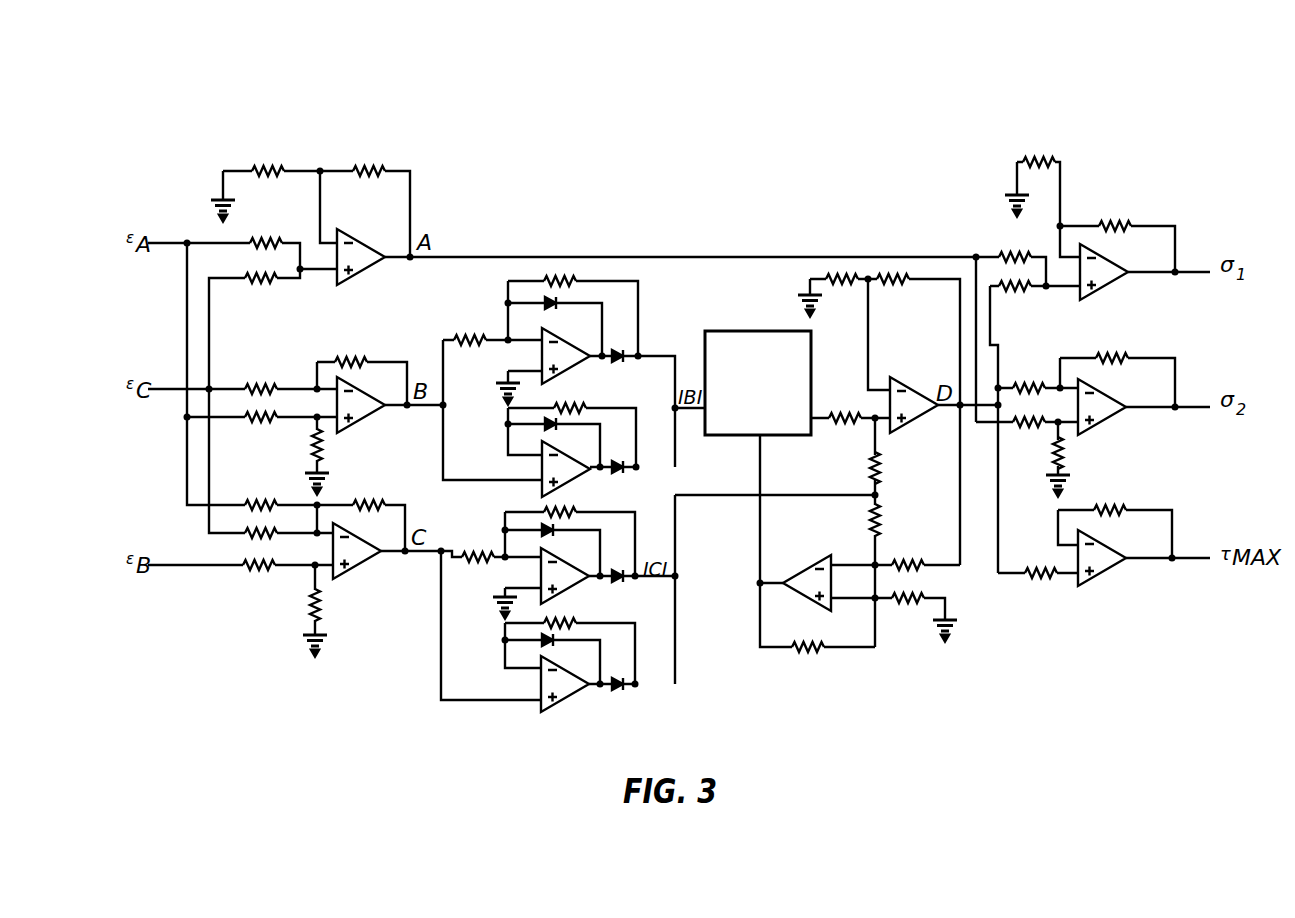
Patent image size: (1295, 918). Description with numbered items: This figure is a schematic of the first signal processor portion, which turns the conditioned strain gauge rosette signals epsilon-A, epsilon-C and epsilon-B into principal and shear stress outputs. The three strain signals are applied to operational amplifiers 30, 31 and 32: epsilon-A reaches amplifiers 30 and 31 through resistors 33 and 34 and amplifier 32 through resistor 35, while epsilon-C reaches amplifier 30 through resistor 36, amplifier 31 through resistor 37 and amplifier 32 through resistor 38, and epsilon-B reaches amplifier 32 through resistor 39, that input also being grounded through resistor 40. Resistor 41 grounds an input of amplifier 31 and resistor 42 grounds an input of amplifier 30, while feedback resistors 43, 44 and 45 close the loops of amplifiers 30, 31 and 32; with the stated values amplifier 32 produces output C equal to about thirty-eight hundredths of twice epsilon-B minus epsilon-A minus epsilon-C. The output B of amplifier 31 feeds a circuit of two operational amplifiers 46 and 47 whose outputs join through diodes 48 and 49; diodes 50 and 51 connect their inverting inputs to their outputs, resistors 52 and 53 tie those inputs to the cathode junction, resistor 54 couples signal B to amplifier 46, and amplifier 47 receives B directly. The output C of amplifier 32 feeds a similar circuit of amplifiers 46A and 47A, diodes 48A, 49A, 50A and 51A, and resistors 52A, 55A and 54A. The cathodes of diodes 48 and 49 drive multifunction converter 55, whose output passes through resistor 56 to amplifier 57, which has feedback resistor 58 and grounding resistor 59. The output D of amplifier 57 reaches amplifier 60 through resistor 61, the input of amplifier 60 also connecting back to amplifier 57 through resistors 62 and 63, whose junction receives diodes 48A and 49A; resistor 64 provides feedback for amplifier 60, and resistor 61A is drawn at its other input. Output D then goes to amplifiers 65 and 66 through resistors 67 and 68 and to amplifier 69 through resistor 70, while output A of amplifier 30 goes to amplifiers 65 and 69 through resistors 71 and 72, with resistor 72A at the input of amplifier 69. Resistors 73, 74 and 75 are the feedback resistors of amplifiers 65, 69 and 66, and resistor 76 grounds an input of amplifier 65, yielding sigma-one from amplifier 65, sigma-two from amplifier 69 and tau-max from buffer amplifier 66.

The operational amplifier 30 is at (371, 281).
The operational amplifier 31 is at (367, 428).
The operational amplifier 32 is at (356, 573).
The resistor 33 is at (266, 238).
The resistor 34 is at (270, 423).
The resistor 35 is at (248, 500).
The resistor 36 is at (275, 284).
The resistor 37 is at (272, 385).
The resistor 38 is at (243, 537).
The resistor 39 is at (254, 572).
The resistor 40 is at (308, 609).
The resistor 41 is at (323, 450).
The resistor 42 is at (278, 167).
The feedback resistor 43 is at (380, 167).
The resistor 44 is at (353, 358).
The resistor 45 is at (373, 500).
The operational amplifier 46 is at (541, 352).
The operational amplifier 47 is at (541, 462).
The diode 48 is at (618, 350).
The diode 49 is at (617, 461).
The diode 50 is at (552, 308).
The diode 51 is at (549, 428).
The resistor 52 is at (576, 279).
The resistor 53 is at (586, 406).
The resistor 54 is at (470, 335).
The operational amplifier 46A is at (540, 568).
The operational amplifier 47A is at (560, 713).
The diode 48A is at (620, 579).
The diode 49A is at (623, 687).
The diode 50A is at (551, 534).
The diode 51A is at (546, 643).
The resistor 52A is at (577, 510).
The resistor 55A is at (562, 620).
The resistor 54A is at (478, 554).
The multifunction converter 55 is at (724, 331).
The resistor 56 is at (845, 423).
The operational amplifier 57 is at (906, 421).
The resistor 58 is at (898, 275).
The resistor 59 is at (838, 275).
The amplifier 60 is at (812, 566).
The resistor 61 is at (925, 568).
The resistor 61A is at (910, 603).
The resistor 62 is at (881, 516).
The resistor 63 is at (881, 471).
The resistor 64 is at (820, 651).
The operational amplifier 65 is at (1114, 287).
The buffer amplifier 66 is at (1107, 585).
The resistor 67 is at (1012, 292).
The resistor 68 is at (1041, 577).
The operational amplifier 69 is at (1114, 424).
The resistor 70 is at (1030, 385).
The resistor 71 is at (1000, 254).
The resistor 72 is at (1028, 431).
The resistor 72A is at (1065, 455).
The resistor 73 is at (1125, 224).
The resistor 74 is at (1128, 356).
The resistor 75 is at (1124, 508).
The resistor 76 is at (1045, 159).